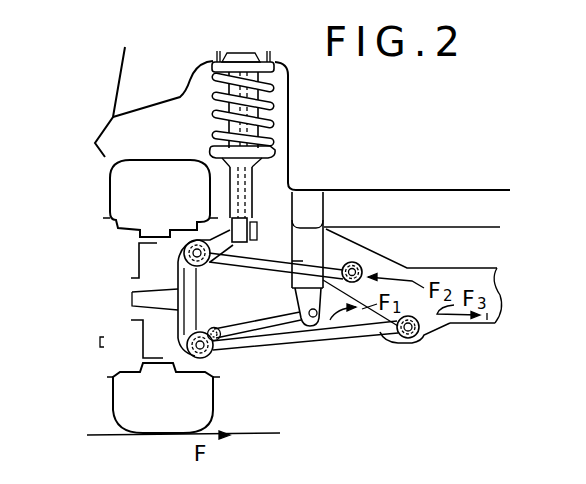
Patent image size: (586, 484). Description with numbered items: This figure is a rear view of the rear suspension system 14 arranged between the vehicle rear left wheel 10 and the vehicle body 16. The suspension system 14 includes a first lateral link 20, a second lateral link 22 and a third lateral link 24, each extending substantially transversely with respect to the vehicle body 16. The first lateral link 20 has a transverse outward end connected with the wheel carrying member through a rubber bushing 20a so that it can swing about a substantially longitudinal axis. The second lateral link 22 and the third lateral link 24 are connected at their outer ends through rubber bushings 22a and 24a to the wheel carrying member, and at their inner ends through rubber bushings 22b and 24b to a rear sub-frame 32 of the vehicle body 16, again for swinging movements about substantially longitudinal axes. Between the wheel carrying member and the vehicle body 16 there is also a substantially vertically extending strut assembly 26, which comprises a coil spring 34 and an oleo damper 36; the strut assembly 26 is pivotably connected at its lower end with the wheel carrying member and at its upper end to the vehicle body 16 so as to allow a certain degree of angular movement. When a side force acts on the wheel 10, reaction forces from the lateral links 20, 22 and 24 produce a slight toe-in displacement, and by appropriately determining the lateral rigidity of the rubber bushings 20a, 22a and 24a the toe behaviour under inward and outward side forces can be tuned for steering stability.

The vehicle rear left wheel 10 is at (110, 192).
The rear suspension system 14 is at (229, 358).
The vehicle body 16 is at (158, 102).
The first lateral link 20 is at (255, 340).
The rubber bushing 20a is at (216, 325).
The second lateral link 22 is at (265, 260).
The rubber bushing 22a is at (183, 252).
The rubber bushing 22b is at (366, 262).
The third lateral link 24 is at (291, 343).
The rubber bushing 24a is at (185, 347).
The rubber bushing 24b is at (408, 340).
The strut assembly 26 is at (259, 178).
The rear sub-frame 32 is at (483, 325).
The coil spring 34 is at (270, 104).
The oleo damper 36 is at (272, 142).